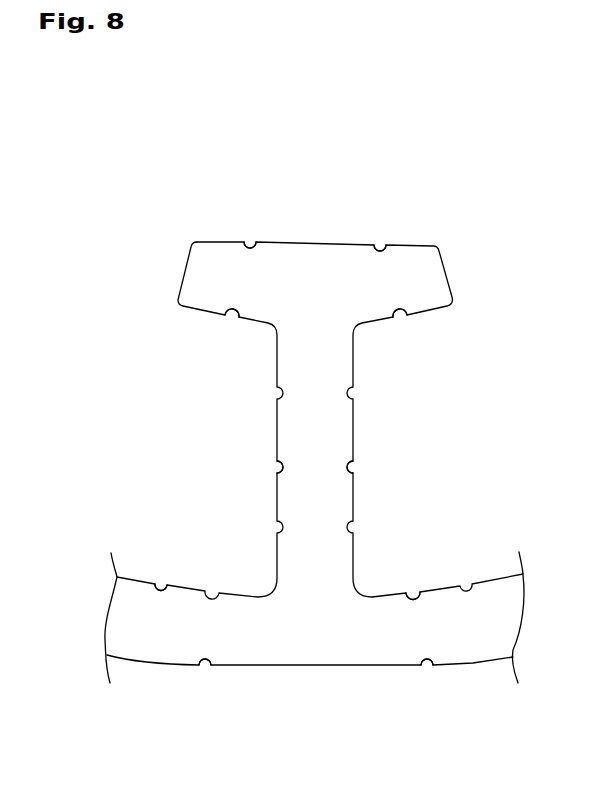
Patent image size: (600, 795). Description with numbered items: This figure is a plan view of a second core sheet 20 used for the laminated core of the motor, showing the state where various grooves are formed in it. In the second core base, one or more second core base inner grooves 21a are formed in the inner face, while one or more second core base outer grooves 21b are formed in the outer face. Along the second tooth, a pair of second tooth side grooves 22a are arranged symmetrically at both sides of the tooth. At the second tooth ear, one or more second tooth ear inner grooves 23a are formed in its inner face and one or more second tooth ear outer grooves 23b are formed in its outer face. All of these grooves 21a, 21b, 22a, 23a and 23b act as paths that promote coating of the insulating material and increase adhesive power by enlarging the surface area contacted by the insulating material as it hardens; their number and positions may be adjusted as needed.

The second core sheet 20 is at (452, 190).
The second core base inner groove 21a is at (161, 589).
The second core base outer groove 21b is at (205, 661).
The second tooth side groove 22a is at (276, 467).
The second tooth ear inner groove 23a is at (251, 243).
The second tooth ear outer groove 23b is at (232, 310).